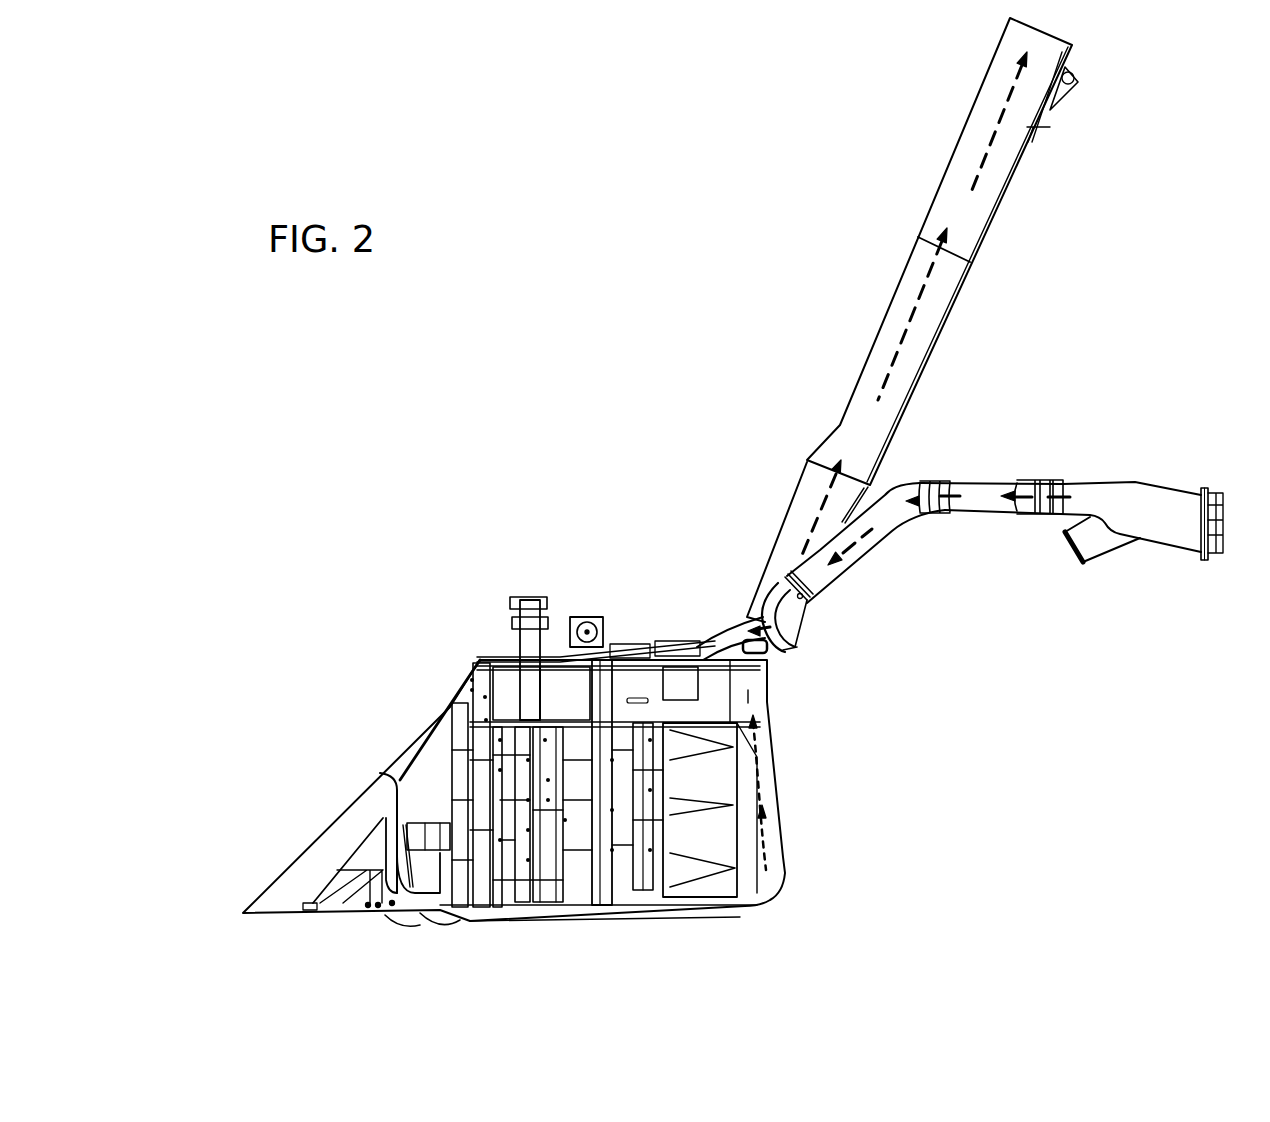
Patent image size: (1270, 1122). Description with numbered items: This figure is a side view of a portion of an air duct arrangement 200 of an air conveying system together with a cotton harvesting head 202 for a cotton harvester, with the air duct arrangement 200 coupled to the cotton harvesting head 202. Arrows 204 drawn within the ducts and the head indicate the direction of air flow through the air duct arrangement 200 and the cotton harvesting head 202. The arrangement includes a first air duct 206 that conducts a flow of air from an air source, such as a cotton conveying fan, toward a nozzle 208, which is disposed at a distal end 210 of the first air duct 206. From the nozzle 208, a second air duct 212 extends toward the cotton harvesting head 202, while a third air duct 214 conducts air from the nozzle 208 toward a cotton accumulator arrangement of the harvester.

The air duct arrangement 200 is at (640, 234).
The cotton harvesting head 202 is at (425, 737).
The arrows 204 is at (990, 142).
The first air duct 206 is at (1120, 500).
The nozzle 208 is at (748, 606).
The distal end 210 is at (800, 624).
The second air duct 212 is at (733, 627).
The third air duct 214 is at (898, 299).